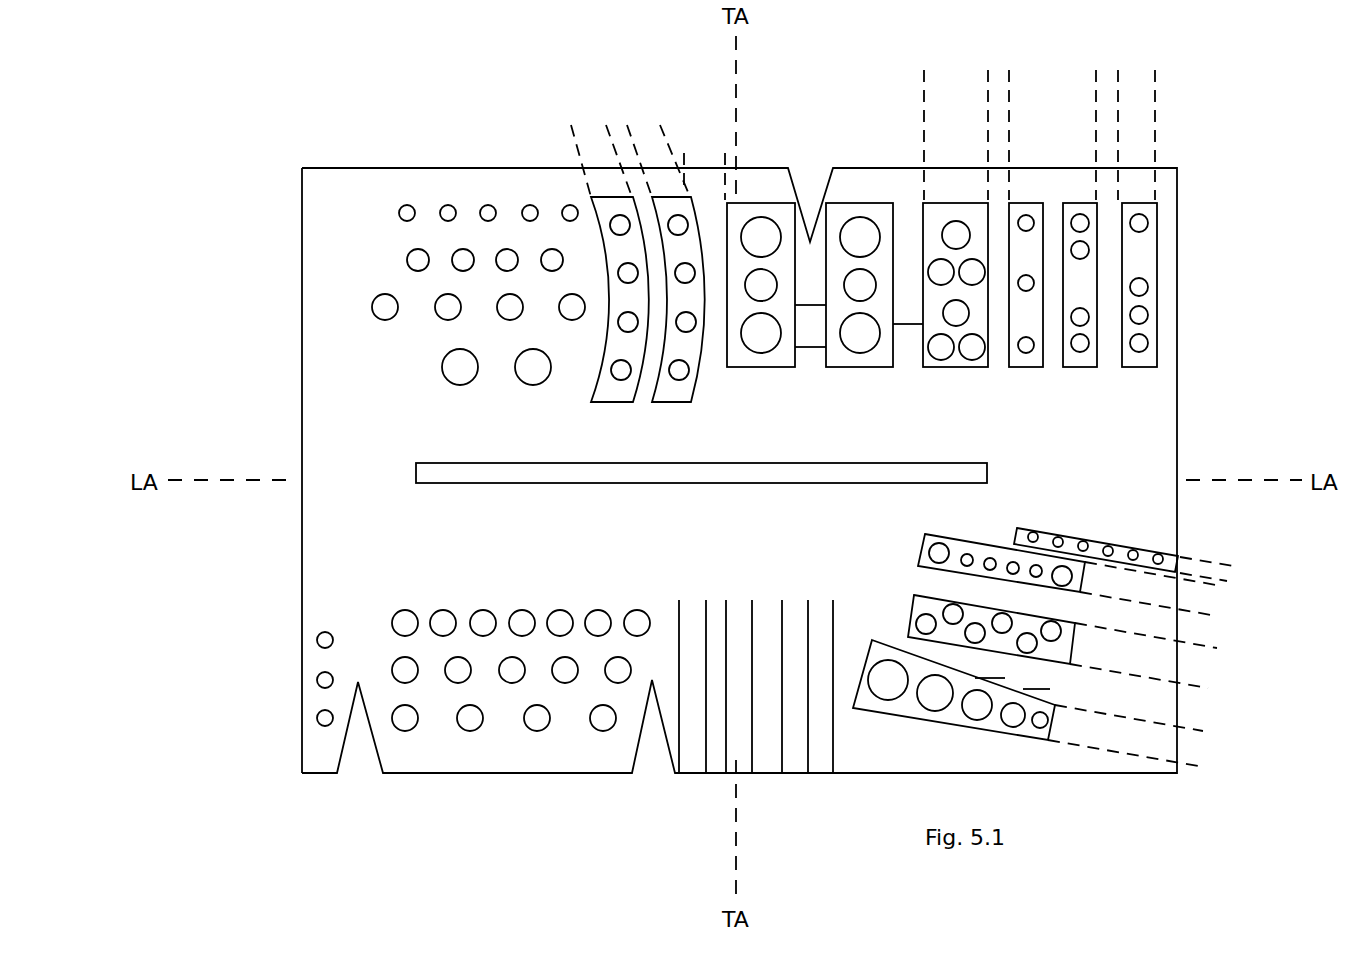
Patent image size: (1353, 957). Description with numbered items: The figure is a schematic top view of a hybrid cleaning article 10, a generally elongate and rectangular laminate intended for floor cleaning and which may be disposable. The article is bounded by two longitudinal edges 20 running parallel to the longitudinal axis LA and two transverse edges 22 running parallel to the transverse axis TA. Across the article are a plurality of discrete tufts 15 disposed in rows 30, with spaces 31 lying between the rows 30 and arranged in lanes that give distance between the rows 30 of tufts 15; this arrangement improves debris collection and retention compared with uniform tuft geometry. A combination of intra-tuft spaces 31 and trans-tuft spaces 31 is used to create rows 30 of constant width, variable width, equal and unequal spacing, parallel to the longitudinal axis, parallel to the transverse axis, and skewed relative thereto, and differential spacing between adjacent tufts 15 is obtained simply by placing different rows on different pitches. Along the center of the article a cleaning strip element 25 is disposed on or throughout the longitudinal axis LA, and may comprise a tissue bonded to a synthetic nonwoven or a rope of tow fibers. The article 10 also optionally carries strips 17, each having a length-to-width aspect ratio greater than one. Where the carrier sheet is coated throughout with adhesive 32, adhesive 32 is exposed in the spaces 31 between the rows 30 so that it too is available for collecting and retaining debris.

The cleaning article 10 is at (244, 132).
The tufts 15 is at (550, 260).
The strips 17 is at (690, 758).
The longitudinal edges 20 is at (507, 168).
The transverse edges 22 is at (301, 212).
The cleaning strip element 25 is at (590, 476).
The rows 30 is at (1192, 766).
The spaces 31 is at (412, 306).
The adhesive 32 is at (923, 486).